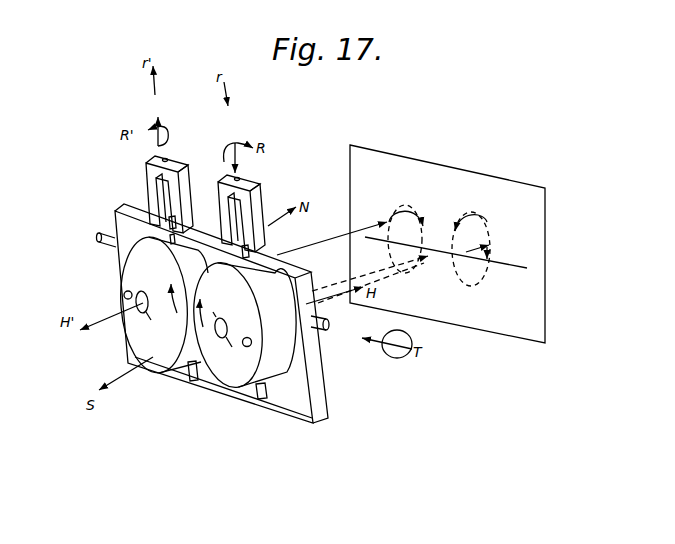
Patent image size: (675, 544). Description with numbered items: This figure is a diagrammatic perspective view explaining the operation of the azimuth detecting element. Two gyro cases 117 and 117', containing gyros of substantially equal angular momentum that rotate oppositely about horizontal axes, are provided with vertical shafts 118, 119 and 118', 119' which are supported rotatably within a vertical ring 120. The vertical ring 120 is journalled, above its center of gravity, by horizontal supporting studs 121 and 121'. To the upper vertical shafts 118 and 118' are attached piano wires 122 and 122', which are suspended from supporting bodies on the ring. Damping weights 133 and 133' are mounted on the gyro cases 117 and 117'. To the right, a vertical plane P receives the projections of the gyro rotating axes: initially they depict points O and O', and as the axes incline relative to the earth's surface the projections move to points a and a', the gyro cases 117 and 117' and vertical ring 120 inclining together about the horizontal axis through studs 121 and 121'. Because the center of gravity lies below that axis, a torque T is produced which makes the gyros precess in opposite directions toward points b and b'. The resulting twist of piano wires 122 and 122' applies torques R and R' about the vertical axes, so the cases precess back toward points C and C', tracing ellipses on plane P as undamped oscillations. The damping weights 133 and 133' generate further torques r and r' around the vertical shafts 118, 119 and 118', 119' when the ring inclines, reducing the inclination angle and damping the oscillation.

The gyro case 117 is at (245, 329).
The gyro case 117' is at (162, 319).
The vertical shaft 118 is at (273, 242).
The vertical shaft 118' is at (196, 218).
The vertical shaft 119 is at (272, 412).
The vertical shaft 119' is at (205, 392).
The vertical ring 120 is at (324, 409).
The horizontal supporting stud 121 is at (334, 342).
The horizontal supporting stud 121' is at (94, 231).
The piano wire 122 is at (257, 213).
The piano wire 122' is at (146, 194).
The damping weight 133 is at (267, 338).
The damping weight 133' is at (105, 295).
The vertical plane P is at (513, 188).